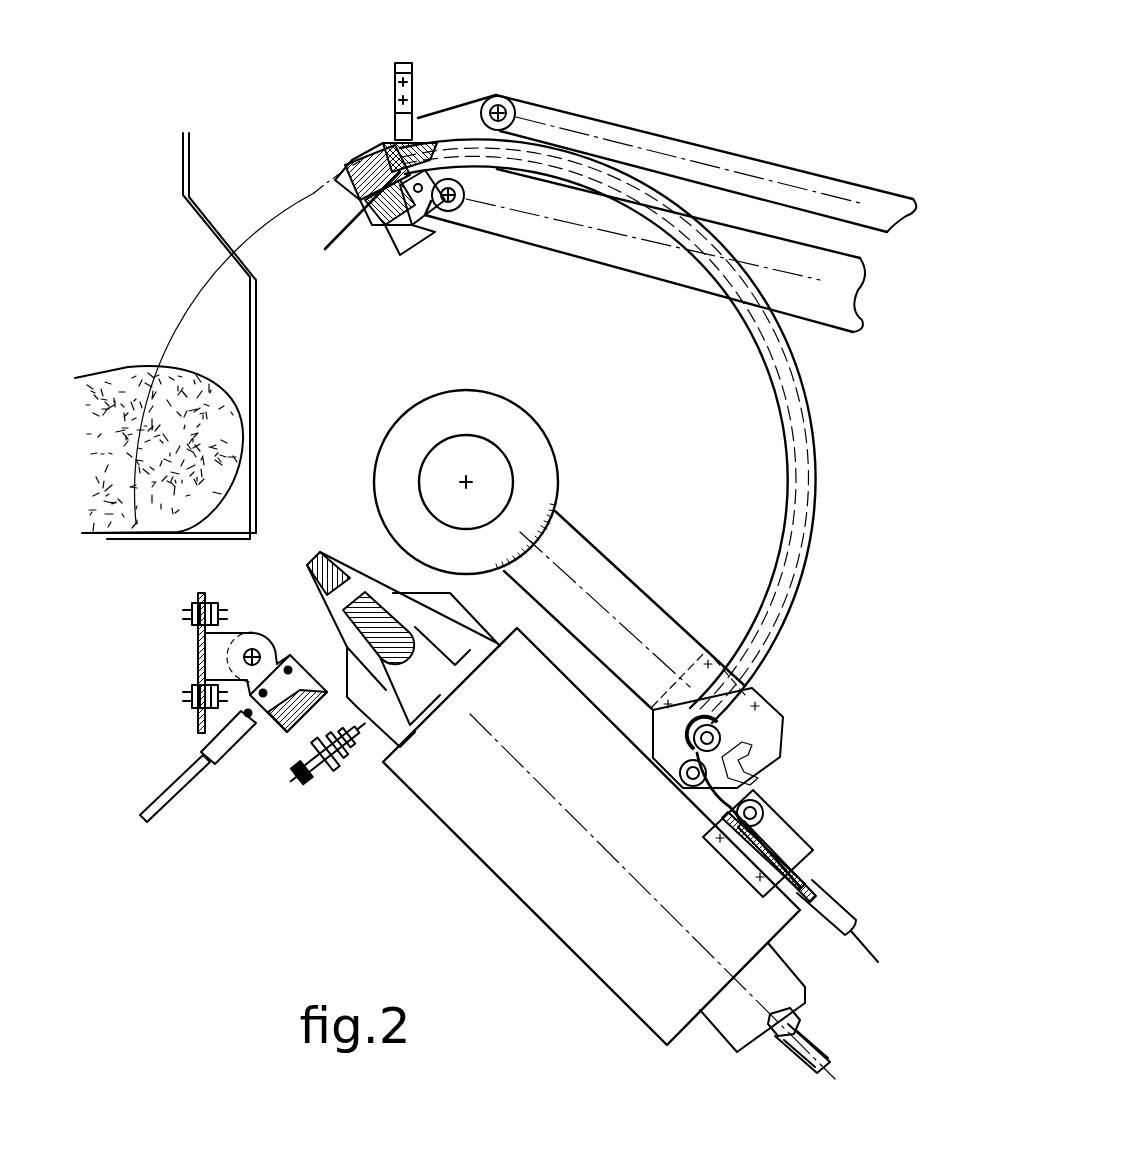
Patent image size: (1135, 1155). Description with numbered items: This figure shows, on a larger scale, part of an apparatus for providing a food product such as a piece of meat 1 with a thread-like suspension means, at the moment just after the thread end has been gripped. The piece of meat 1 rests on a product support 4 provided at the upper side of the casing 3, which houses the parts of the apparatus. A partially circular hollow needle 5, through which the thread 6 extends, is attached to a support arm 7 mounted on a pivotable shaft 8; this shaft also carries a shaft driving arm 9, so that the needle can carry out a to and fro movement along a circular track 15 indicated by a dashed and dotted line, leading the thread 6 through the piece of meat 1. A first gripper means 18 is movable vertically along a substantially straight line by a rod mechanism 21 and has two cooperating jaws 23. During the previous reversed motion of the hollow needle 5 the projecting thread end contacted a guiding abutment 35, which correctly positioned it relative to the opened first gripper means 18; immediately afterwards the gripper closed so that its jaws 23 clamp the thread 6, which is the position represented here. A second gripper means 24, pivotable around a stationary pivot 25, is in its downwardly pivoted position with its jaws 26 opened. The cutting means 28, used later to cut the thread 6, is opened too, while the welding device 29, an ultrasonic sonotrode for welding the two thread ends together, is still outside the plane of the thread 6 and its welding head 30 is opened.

The piece of meat 1 is at (182, 392).
The casing 3 is at (183, 148).
The product support 4 is at (178, 541).
The hollow needle 5 is at (806, 489).
The thread 6 is at (336, 241).
The support arm 7 is at (612, 588).
The pivotable shaft 8 is at (472, 483).
The shaft driving arm 9 is at (416, 120).
The circular track 15 is at (292, 197).
The first gripper means 18 is at (393, 240).
The rod mechanism 21 is at (619, 118).
The jaws 23 is at (372, 177).
The second gripper means 24 is at (276, 680).
The stationary pivot 25 is at (252, 648).
The jaws 26 is at (272, 727).
The cutting means 28 is at (332, 765).
The welding device 29 is at (443, 824).
The welding head 30 is at (333, 557).
The guiding abutment 35 is at (418, 215).